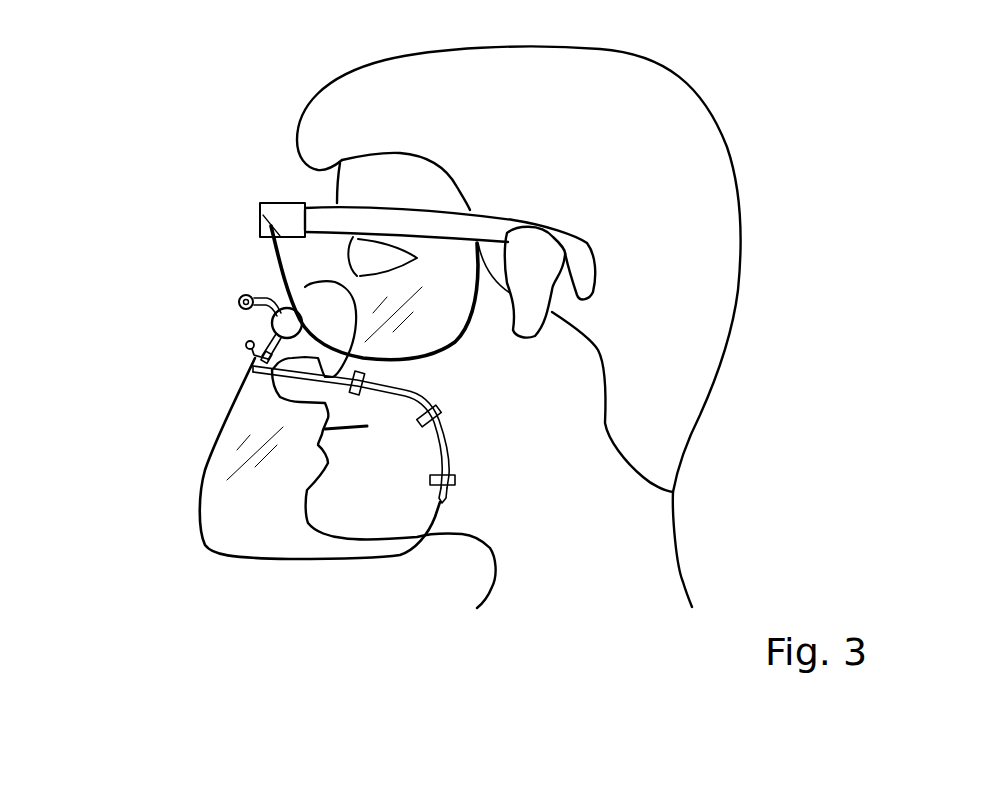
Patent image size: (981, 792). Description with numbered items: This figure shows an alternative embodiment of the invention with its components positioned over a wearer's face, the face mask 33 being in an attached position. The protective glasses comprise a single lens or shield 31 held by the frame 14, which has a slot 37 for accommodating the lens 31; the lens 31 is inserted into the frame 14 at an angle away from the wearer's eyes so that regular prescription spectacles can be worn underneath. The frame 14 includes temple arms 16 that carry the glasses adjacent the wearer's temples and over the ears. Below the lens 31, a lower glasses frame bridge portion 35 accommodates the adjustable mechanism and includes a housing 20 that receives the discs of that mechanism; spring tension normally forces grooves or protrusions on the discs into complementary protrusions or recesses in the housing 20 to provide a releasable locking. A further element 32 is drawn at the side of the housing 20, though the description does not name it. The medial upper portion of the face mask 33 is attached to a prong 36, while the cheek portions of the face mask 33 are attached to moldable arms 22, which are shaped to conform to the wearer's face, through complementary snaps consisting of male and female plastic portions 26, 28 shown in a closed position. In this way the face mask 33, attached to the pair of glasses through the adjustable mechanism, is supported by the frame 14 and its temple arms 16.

The frame 14 is at (288, 203).
The temple arms 16 is at (517, 218).
The housing 20 is at (305, 287).
The moldable arms 22 is at (447, 435).
The male snap portion 26 is at (646, 457).
The female snap portion 28 is at (456, 481).
The single lens or shield 31 is at (466, 273).
The connector fitting 32 is at (238, 306).
The face mask 33 is at (240, 553).
The lower glasses frame bridge portion 35 is at (288, 308).
The prong 36 is at (247, 349).
The slot 37 is at (260, 204).